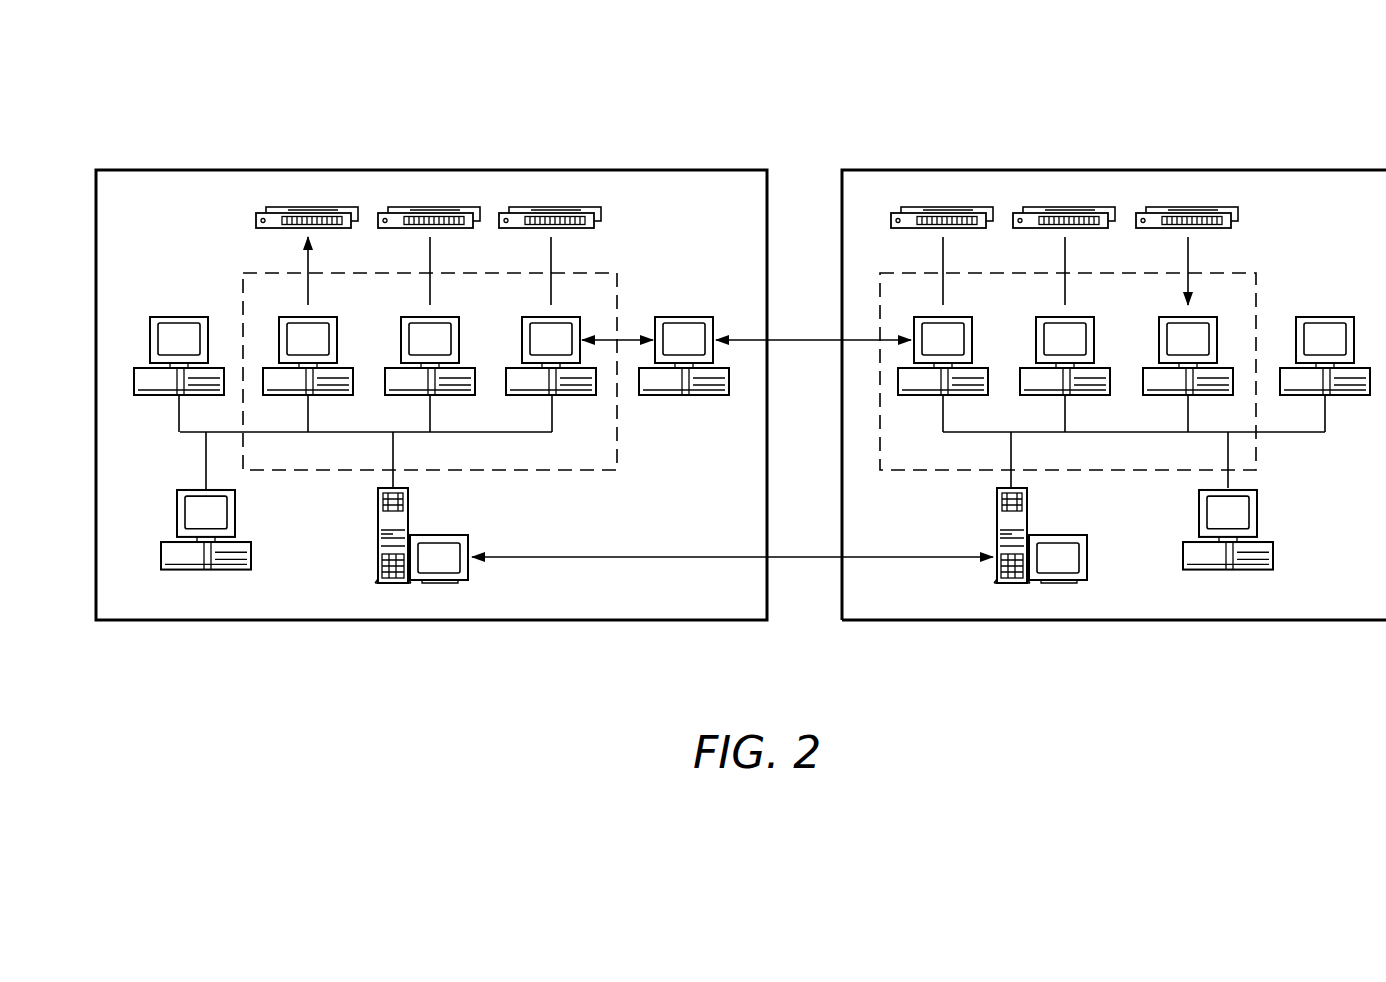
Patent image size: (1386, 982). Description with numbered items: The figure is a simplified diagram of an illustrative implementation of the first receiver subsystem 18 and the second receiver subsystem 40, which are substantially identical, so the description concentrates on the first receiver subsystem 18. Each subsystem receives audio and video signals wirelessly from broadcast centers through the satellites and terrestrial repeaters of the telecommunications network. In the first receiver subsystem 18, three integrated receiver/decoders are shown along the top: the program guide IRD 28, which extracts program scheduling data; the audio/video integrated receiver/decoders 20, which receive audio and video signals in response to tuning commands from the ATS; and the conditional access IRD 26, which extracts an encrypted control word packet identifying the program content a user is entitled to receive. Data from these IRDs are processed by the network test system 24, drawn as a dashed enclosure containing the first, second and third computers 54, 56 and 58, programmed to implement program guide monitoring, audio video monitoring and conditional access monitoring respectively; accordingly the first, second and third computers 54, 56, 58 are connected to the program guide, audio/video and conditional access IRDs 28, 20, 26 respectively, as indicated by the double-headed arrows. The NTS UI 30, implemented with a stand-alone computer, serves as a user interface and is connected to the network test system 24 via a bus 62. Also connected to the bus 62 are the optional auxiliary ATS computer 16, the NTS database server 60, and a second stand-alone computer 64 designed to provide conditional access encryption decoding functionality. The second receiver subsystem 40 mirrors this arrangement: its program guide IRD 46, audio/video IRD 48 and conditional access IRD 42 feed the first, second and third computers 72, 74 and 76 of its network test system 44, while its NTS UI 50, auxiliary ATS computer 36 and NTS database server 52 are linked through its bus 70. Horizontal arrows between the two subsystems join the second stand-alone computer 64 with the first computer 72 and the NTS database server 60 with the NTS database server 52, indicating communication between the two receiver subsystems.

The first receiver subsystem 18 is at (632, 140).
The second receiver subsystem 40 is at (1272, 140).
The network test system 24 is at (617, 285).
The network test system 44 is at (1256, 285).
The program guide IRD 28 is at (308, 207).
The integrated receiver/decoders 20 is at (430, 207).
The conditional access IRD 26 is at (551, 207).
The program guide IRD 46 is at (943, 207).
The audio/video IRD 48 is at (1065, 207).
The conditional access IRD 42 is at (1188, 207).
The NTS UI 30 is at (196, 317).
The NTS UI 50 is at (1320, 317).
The first computer 54 is at (322, 317).
The second computer 56 is at (444, 317).
The third computer 58 is at (565, 317).
The second stand-alone computer 64 is at (682, 317).
The first computer 72 is at (958, 317).
The second computer 74 is at (1081, 317).
The third computer 76 is at (1199, 317).
The bus 62 is at (196, 433).
The bus 70 is at (1283, 432).
The auxiliary ATS computer 16 is at (252, 552).
The auxiliary ATS computer 36 is at (1274, 552).
The NTS database server 60 is at (452, 535).
The NTS database server 52 is at (1070, 535).